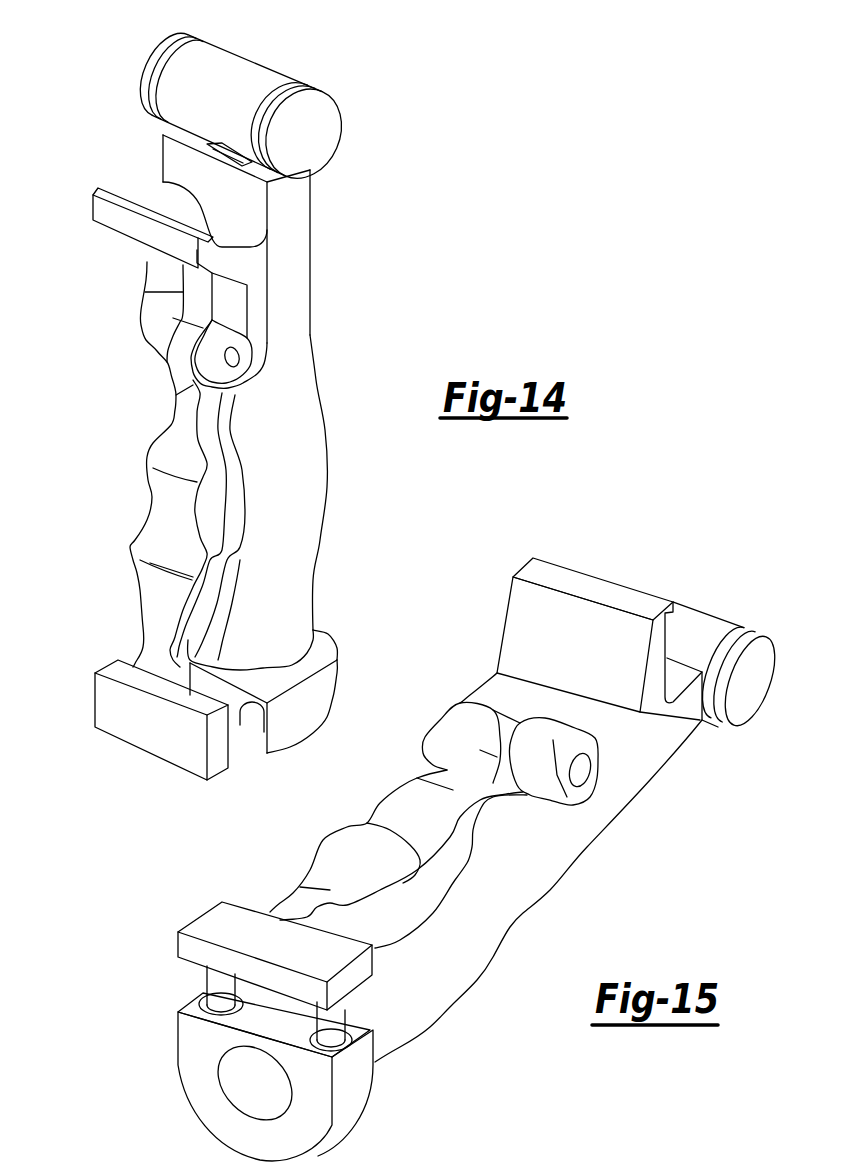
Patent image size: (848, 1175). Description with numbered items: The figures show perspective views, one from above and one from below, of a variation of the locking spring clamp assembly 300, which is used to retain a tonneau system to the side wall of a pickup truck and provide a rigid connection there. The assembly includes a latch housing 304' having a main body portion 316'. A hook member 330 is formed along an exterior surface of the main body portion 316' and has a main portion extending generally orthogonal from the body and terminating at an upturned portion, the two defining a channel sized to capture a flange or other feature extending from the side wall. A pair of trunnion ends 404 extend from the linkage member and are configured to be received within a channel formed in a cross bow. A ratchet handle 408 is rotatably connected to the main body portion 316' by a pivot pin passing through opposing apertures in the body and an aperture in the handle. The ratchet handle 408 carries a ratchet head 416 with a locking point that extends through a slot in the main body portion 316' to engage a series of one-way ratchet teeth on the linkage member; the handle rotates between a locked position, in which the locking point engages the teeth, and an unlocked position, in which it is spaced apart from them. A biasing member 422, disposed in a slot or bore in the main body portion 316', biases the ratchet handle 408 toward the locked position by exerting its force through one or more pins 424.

In FIG. 14, the locking spring clamp assembly 300 is at (401, 279).
In FIG. 15, the locking spring clamp assembly 300 is at (692, 822).
In FIG. 14, the latch housing 304' is at (283, 497).
In FIG. 15, the latch housing 304' is at (557, 802).
In FIG. 14, the main body portion 316' is at (299, 568).
In FIG. 15, the main body portion 316' is at (538, 894).
In FIG. 14, the hook member 330 is at (93, 208).
In FIG. 15, the hook member 330 is at (527, 567).
In FIG. 14, the trunnion ends 404 is at (143, 73).
In FIG. 15, the trunnion ends 404 is at (748, 715).
In FIG. 14, the ratchet handle 408 is at (133, 543).
In FIG. 15, the ratchet handle 408 is at (378, 813).
In FIG. 14, the ratchet head 416 is at (183, 292).
In FIG. 15, the ratchet head 416 is at (537, 710).
In FIG. 14, the biasing member 422 is at (255, 727).
In FIG. 14, the pins 424 is at (245, 722).